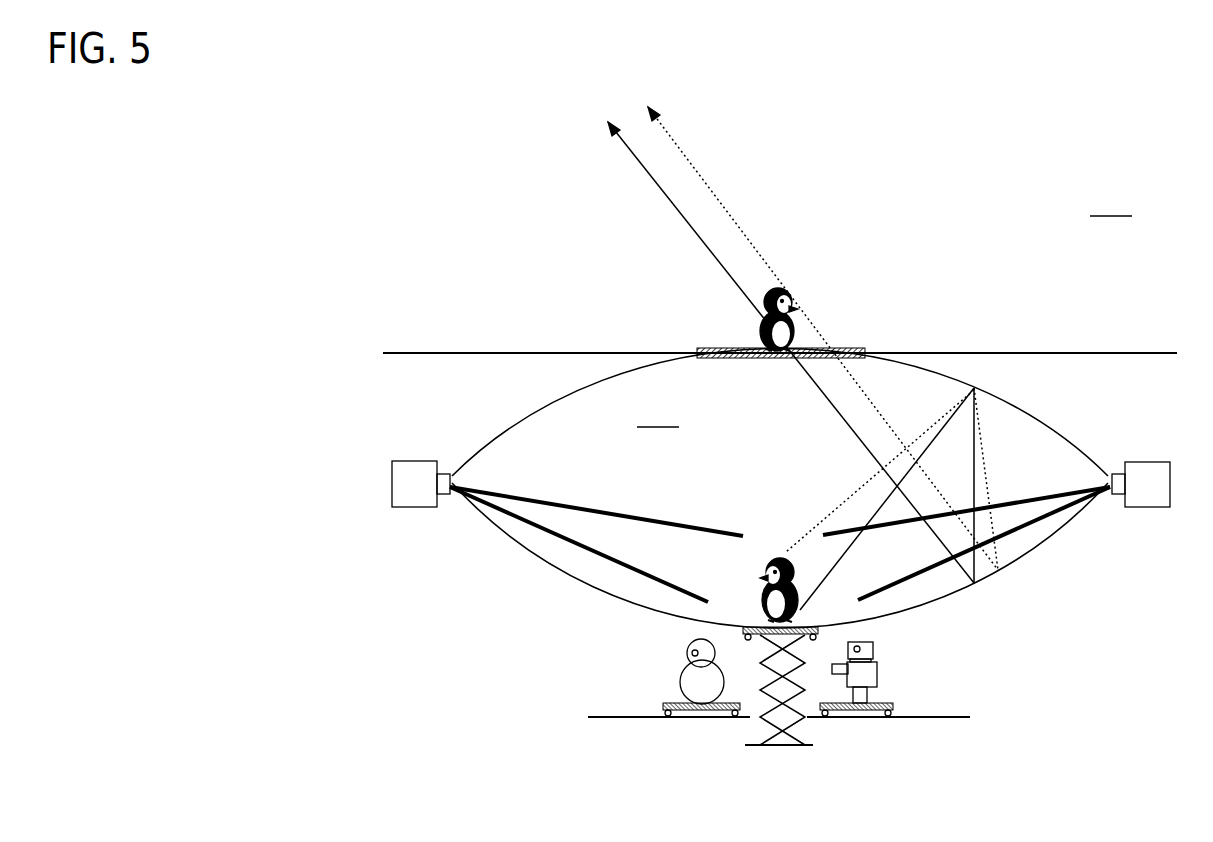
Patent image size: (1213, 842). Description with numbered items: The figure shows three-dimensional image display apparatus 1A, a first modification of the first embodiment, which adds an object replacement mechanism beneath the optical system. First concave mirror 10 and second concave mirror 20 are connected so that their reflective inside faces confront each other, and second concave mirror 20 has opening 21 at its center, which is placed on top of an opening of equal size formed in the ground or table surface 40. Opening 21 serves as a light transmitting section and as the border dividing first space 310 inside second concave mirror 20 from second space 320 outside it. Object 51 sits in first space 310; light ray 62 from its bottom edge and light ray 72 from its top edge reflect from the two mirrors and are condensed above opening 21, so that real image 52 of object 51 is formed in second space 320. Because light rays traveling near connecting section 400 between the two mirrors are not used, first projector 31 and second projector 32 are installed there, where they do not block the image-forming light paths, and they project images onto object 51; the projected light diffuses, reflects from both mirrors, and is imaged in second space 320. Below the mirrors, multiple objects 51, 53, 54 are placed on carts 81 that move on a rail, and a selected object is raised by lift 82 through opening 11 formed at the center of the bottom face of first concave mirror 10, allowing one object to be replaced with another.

The three-dimensional image display apparatus 1A is at (373, 118).
The first concave mirror 10 is at (550, 567).
The second concave mirror 20 is at (490, 447).
The ground or table surface 40 is at (1133, 352).
The opening 21 is at (833, 350).
The first space 310 is at (658, 413).
The second space 320 is at (1111, 202).
The first projector 31 is at (408, 508).
The second projector 32 is at (1150, 508).
The connecting section 400 is at (450, 510).
The light ray 62 is at (697, 235).
The light ray 72 is at (700, 172).
The real image 52 is at (790, 290).
The object 51 is at (762, 587).
The opening 11 is at (817, 630).
The lift 82 is at (793, 747).
The carts 81 is at (743, 630).
The object 53 is at (680, 682).
The object 54 is at (878, 682).